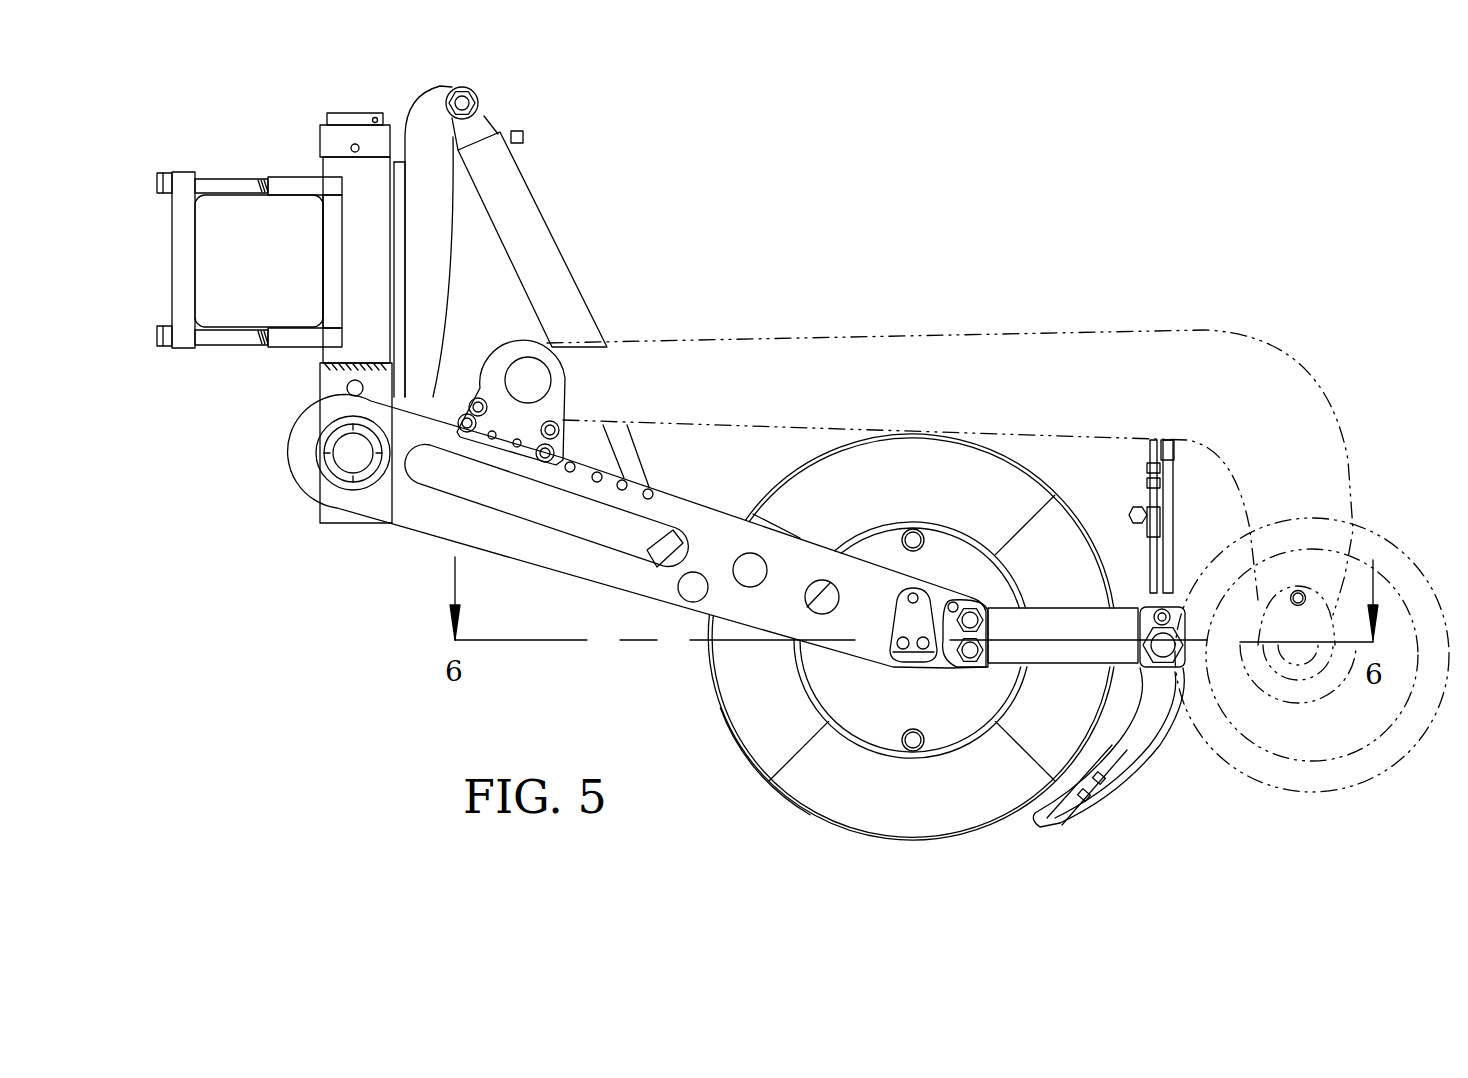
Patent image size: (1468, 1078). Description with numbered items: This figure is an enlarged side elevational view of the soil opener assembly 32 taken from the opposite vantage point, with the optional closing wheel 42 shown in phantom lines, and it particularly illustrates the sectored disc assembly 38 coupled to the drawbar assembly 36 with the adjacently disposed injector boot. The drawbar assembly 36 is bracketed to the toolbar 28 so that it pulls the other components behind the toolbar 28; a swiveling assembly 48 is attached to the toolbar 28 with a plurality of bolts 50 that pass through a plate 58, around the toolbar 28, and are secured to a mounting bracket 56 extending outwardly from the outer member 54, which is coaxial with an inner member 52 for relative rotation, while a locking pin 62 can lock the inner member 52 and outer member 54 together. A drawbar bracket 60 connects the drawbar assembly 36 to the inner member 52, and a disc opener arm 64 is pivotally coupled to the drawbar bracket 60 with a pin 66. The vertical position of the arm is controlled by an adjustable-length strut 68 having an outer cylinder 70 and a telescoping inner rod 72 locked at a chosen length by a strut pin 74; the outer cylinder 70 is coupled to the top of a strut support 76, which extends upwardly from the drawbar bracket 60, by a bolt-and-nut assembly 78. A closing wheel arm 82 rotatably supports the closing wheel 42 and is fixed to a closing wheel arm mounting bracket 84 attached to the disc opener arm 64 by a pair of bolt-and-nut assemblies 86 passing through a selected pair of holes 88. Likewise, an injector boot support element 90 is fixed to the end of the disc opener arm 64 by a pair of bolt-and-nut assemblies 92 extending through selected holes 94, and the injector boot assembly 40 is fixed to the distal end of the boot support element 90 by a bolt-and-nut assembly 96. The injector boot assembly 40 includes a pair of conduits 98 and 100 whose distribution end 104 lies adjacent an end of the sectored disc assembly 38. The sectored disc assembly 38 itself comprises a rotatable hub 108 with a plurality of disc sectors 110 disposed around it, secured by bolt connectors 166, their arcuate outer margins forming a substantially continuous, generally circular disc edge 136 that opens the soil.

The toolbar 28 is at (277, 227).
The soil opener assembly 32 is at (1181, 188).
The drawbar assembly 36 is at (653, 304).
The sectored disc assembly 38 is at (666, 711).
The injector boot assembly 40 is at (1153, 791).
The closing wheel 42 is at (1386, 745).
The swiveling assembly 48 is at (385, 100).
The bolts 50 is at (216, 182).
The inner member 52 is at (345, 113).
The outer member 54 is at (329, 135).
The mounting bracket 56 is at (300, 338).
The plate 58 is at (178, 268).
The drawbar bracket 60 is at (337, 522).
The locking pin 62 is at (346, 392).
The disc opener arm 64 is at (540, 558).
The pin 66 is at (340, 452).
The adjustable-length strut 68 is at (607, 183).
The outer cylinder 70 is at (555, 272).
The inner rod 72 is at (640, 462).
The strut pin 74 is at (524, 138).
The strut support 76 is at (437, 272).
The bolt-and-nut assembly 78 is at (472, 100).
The closing wheel arm 82 is at (1240, 358).
The closing wheel arm mounting bracket 84 is at (507, 364).
The bolt-and-nut assemblies 86 is at (547, 428).
The holes 88 is at (654, 494).
The injector boot support element 90 is at (1070, 656).
The bolt-and-nut assemblies 92 is at (962, 656).
The holes 94 is at (952, 602).
The bolt-and-nut assembly 96 is at (1176, 645).
The conduit 98 is at (1150, 450).
The conduit 100 is at (1166, 470).
The distribution end 104 is at (1085, 838).
The rotatable hub 108 is at (824, 680).
The disc sectors 110 is at (823, 482).
The disc edge 136 is at (787, 800).
The bolt connectors 166 is at (918, 549).